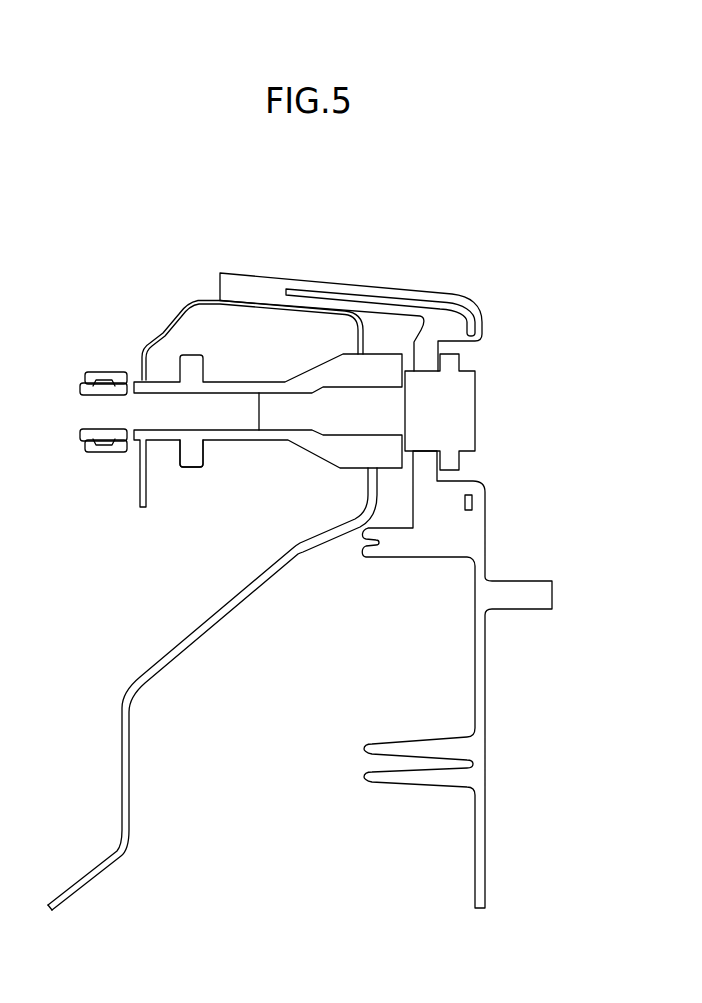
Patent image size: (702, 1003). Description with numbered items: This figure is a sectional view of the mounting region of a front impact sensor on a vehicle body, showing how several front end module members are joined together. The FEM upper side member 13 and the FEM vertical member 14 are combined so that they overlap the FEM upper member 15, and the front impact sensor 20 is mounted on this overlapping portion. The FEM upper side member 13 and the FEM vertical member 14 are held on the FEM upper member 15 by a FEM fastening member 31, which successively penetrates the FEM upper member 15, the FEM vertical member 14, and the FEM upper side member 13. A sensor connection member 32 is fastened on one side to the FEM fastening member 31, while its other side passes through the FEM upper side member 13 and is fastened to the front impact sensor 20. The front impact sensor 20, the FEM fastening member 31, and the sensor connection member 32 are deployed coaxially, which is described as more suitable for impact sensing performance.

The FEM upper side member 13 is at (190, 298).
The FEM vertical member 14 is at (245, 607).
The FEM upper member 15 is at (458, 540).
The front impact sensor 20 is at (94, 372).
The FEM fastening member 31 is at (463, 412).
The sensor connection member 32 is at (197, 459).